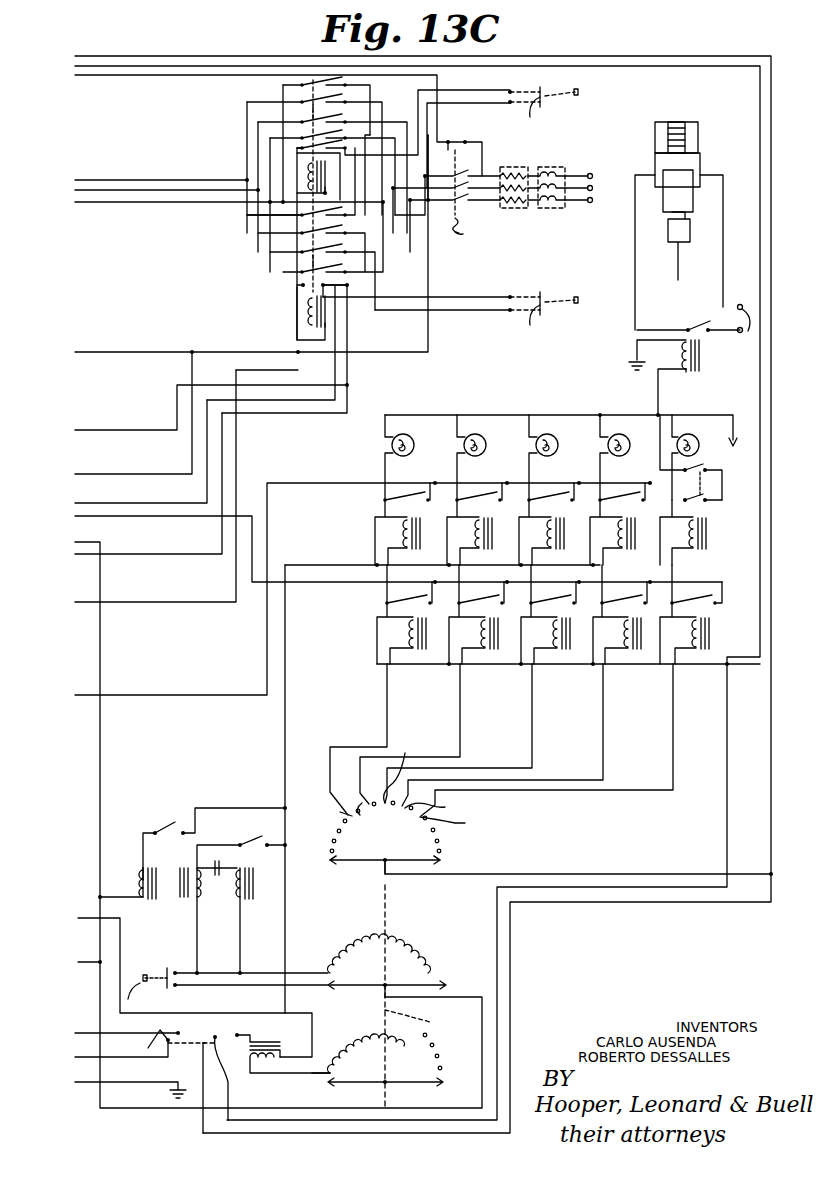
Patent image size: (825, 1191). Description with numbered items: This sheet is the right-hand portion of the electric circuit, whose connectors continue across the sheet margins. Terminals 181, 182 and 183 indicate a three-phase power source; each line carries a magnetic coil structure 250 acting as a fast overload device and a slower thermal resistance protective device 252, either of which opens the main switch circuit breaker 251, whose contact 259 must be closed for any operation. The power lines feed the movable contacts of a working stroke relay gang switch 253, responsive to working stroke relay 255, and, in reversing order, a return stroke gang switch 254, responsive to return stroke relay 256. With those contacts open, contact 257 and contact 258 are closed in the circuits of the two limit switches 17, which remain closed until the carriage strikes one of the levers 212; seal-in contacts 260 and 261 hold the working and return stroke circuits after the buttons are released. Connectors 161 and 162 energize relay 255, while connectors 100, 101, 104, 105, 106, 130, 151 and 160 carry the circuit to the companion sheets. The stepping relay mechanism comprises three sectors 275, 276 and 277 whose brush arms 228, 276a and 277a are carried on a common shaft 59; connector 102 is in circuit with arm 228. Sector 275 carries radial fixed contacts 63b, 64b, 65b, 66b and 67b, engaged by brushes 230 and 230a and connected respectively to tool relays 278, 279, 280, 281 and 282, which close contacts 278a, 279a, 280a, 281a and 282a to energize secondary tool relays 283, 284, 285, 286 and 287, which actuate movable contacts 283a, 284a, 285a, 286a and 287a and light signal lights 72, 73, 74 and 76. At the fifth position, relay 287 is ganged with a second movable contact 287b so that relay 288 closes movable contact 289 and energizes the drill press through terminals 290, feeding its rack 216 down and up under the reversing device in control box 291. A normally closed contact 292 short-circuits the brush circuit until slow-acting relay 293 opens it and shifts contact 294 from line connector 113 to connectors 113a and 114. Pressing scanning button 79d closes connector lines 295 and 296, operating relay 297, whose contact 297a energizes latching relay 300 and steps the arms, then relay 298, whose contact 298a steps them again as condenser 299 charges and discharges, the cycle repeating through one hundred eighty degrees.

The connector 102 is at (71, 59).
The supply line 101 is at (71, 68).
The control line 160 is at (72, 76).
The control line 106 is at (71, 183).
The control line 105 is at (71, 192).
The control line 104 is at (72, 203).
The common line 100 is at (71, 355).
The connector 161 is at (72, 503).
The connector 162 is at (72, 554).
The control line 151 is at (71, 607).
The control line 130 is at (71, 698).
The line connector 113 is at (72, 1032).
The connector 113a is at (78, 1060).
The connector 114 is at (71, 1082).
The contact 257 is at (292, 85).
The working stroke relay gang switch 253 is at (318, 110).
The seal-in contact 260 is at (300, 147).
The working stroke relay 255 is at (307, 172).
The contact 258 is at (302, 216).
The return stroke gang switch 254 is at (300, 266).
The seal-in contact 261 is at (300, 284).
The return stroke relay 256 is at (312, 312).
The contact 259 is at (458, 145).
The main switch circuit breaker 251 is at (475, 230).
The thermal resistance protective device 252 is at (514, 210).
The magnetic coil structure 250 is at (552, 210).
The terminal 181 is at (590, 172).
The terminal 182 is at (596, 182).
The terminal 183 is at (590, 207).
The lever 212 is at (555, 92).
The limit switch 17 is at (542, 217).
The rack 216 is at (678, 122).
The control box 291 is at (700, 163).
The movable contact 289 is at (697, 326).
The terminals 290 is at (689, 360).
The relay 288 is at (690, 372).
The signal light 72 is at (410, 446).
The signal light 73 is at (482, 446).
The signal light 74 is at (552, 446).
The signal light 76 is at (622, 446).
The second movable contact 287b is at (709, 467).
The movable contact 287a is at (703, 504).
The secondary tool relay 287 is at (702, 548).
The movable contact 283a is at (405, 492).
The secondary tool relay 283 is at (402, 533).
The movable contact 284a is at (466, 502).
The secondary tool relay 284 is at (496, 532).
The movable contact 285a is at (537, 502).
The secondary tool relay 285 is at (568, 532).
The movable contact 286a is at (606, 502).
The secondary tool relay 286 is at (638, 532).
The contact 278a is at (406, 595).
The contact 279a is at (475, 601).
The contact 280a is at (546, 601).
The contact 281a is at (613, 601).
The contact 282a is at (700, 600).
The tool relay 278 is at (410, 665).
The tool relay 279 is at (482, 665).
The tool relay 280 is at (552, 665).
The tool relay 281 is at (622, 665).
The tool relay 282 is at (692, 665).
The radial fixed contact 65b is at (409, 768).
The radial fixed contact 63b is at (339, 815).
The radial fixed contact 64b is at (372, 822).
The radial fixed contact 66b is at (442, 808).
The radial fixed contact 67b is at (457, 825).
The sector 275 is at (550, 837).
The brush 230 is at (330, 864).
The brush arm 228 is at (379, 864).
The brush 230a is at (442, 859).
The movable contact 297a is at (172, 822).
The movable contact 298a is at (264, 840).
The latching relay 300 is at (148, 867).
The relay 298 is at (180, 899).
The condenser 299 is at (240, 882).
The relay 297 is at (244, 898).
The connector line 296 is at (232, 955).
The selector scanning button 79d is at (147, 988).
The connector line 295 is at (228, 989).
The sector 276 is at (387, 961).
The brush arm 276a is at (381, 984).
The shaft 59 is at (419, 1022).
The sector 277 is at (377, 1053).
The brush arm 277a is at (356, 1084).
The movable contact 294 is at (152, 1044).
The relay 293 is at (290, 1022).
The movable contact 292 is at (226, 1080).